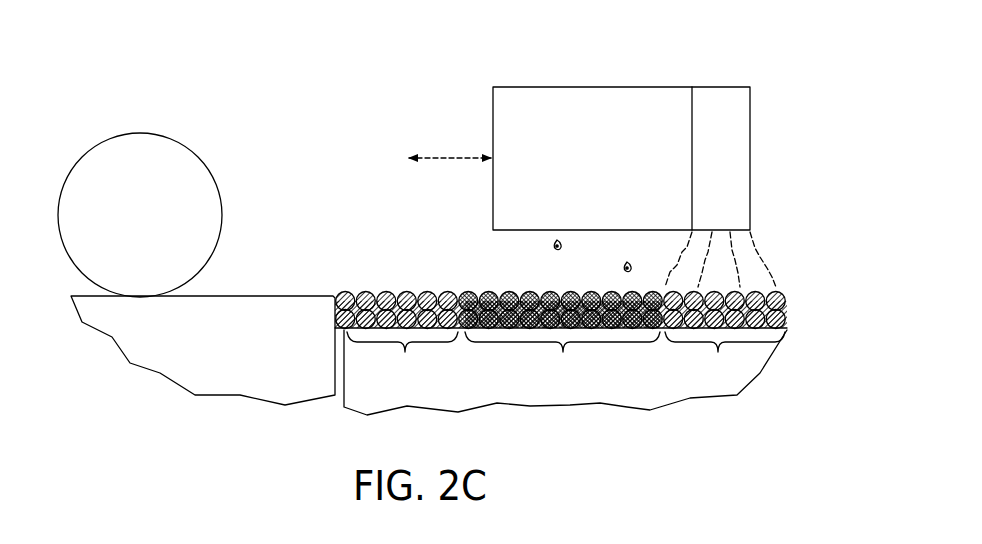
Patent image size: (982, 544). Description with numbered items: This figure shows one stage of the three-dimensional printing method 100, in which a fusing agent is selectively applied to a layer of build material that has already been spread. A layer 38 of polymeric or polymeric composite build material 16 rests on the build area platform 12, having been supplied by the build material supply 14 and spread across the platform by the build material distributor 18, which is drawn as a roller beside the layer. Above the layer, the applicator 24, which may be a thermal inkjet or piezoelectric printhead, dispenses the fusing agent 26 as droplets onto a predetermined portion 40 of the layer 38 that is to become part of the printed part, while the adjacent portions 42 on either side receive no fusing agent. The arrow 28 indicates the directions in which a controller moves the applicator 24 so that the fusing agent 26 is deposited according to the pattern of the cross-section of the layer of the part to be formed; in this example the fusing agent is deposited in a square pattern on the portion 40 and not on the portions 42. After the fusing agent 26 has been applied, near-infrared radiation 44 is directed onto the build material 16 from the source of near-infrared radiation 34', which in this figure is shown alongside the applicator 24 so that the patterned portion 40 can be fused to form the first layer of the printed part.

The 3D printing method 100 is at (198, 111).
The build material distributor 18 is at (217, 185).
The build material supply 14 is at (203, 297).
The build area platform 12 is at (635, 377).
The polymeric or polymeric composite build material 16 is at (787, 294).
The portions 42 is at (566, 357).
The portion 40 is at (562, 357).
The layer 38 is at (438, 280).
The fusing agent 26 is at (620, 266).
The applicator 24 is at (592, 87).
The source of near-infrared radiation 34' is at (764, 158).
The arrow 28 is at (440, 158).
The near-infrared radiation 44 is at (760, 253).